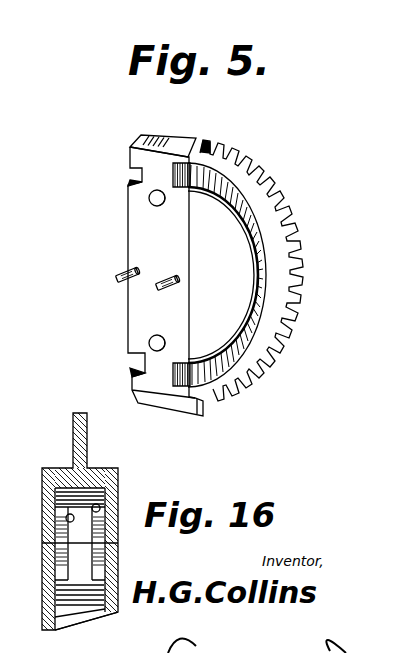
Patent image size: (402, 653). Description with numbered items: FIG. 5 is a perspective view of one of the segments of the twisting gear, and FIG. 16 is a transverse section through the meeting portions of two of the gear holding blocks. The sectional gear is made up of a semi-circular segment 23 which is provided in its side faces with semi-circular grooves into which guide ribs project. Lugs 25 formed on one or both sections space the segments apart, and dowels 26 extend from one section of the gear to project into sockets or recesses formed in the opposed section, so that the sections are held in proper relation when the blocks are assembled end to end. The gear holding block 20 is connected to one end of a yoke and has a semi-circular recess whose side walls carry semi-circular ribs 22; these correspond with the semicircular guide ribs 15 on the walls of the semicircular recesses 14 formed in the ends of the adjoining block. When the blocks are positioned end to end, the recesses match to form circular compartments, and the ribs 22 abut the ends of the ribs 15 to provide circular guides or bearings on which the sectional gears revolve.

In FIG. 5, the semicircular recess 14 is at (265, 305).
In FIG. 16, the semicircular recess 14 is at (112, 602).
In FIG. 16, the semicircular guide rib 15 is at (93, 577).
In FIG. 16, the block 20 is at (115, 468).
In FIG. 16, the semi-circular rib 22 is at (99, 505).
In FIG. 5, the semi-circular segment 23 is at (250, 358).
In FIG. 5, the lug 25 is at (149, 203).
In FIG. 5, the dowel 26 is at (157, 288).